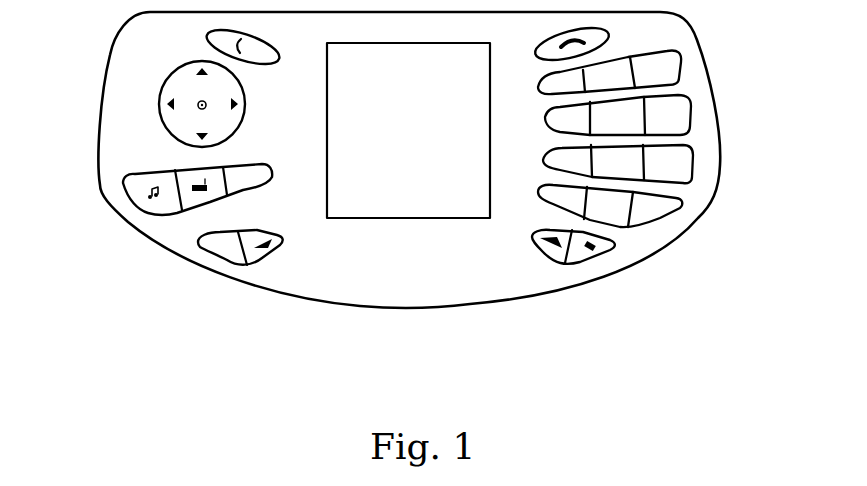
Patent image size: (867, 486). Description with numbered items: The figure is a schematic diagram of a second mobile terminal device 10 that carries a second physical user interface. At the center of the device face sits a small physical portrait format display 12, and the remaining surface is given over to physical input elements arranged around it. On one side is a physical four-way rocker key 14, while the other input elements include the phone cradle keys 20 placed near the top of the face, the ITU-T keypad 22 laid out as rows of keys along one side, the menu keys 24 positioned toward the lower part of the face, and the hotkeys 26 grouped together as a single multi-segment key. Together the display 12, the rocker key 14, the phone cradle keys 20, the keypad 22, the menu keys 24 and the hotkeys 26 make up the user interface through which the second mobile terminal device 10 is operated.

The second mobile terminal device 10 is at (262, 290).
The small physical portrait format display 12 is at (348, 218).
The physical four-way rocker key 14 is at (158, 108).
The phone cradle keys 20 is at (102, 22).
The ITU-T keypad 22 is at (717, 45).
The menu keys 24 is at (116, 235).
The hotkeys 26 is at (122, 190).